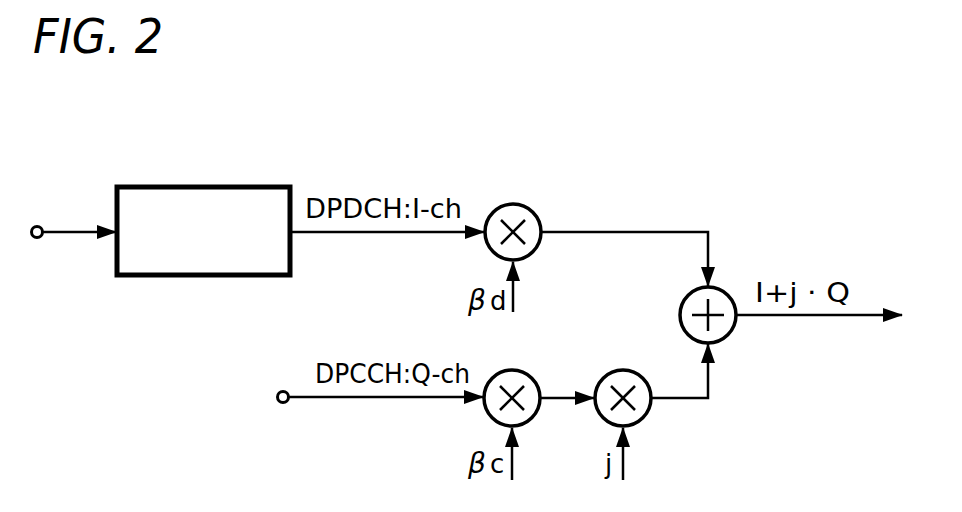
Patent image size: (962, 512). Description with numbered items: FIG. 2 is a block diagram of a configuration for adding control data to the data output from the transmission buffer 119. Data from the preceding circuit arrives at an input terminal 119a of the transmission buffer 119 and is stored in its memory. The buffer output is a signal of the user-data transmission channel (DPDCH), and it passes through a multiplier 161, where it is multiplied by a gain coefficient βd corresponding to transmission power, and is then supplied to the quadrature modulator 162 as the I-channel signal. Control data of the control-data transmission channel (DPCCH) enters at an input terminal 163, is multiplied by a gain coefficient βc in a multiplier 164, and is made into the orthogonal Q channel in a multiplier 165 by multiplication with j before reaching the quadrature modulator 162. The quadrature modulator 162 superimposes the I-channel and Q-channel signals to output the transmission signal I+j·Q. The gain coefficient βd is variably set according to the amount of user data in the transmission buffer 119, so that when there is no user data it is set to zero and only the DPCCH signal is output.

The input terminal 119a is at (38, 226).
The transmission buffer 119 is at (205, 187).
The multiplier 161 is at (525, 205).
The quadrature modulator 162 is at (725, 290).
The input terminal 163 is at (277, 397).
The multiplier 164 is at (524, 371).
The multiplier 165 is at (618, 371).